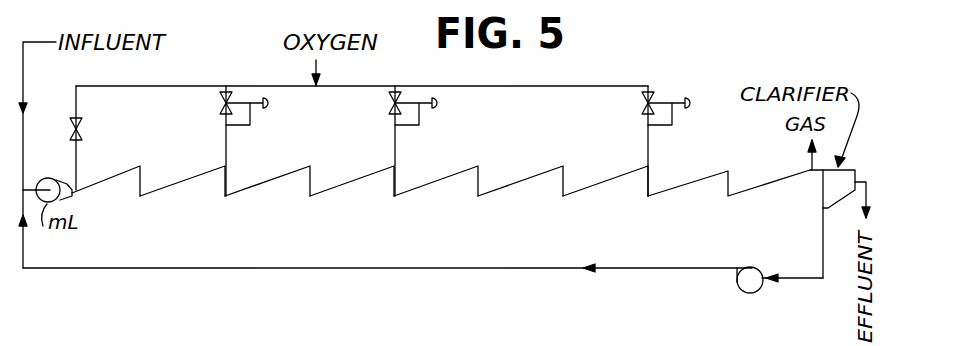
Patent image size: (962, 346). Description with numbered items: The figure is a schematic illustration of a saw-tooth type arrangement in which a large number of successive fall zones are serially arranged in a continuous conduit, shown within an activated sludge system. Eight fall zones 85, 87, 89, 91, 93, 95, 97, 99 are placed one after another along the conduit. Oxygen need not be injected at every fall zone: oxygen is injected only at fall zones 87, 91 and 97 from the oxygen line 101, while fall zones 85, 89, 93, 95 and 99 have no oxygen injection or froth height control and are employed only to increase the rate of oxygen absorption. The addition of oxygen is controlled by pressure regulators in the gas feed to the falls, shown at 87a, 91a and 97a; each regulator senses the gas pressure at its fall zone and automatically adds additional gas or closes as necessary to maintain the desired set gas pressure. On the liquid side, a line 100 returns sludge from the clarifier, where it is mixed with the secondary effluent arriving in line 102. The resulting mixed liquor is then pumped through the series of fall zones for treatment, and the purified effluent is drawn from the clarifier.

The fall zone 85 is at (136, 189).
The fall zone 87 is at (222, 190).
The fall zone 89 is at (307, 190).
The fall zone 91 is at (390, 190).
The fall zone 93 is at (475, 190).
The fall zone 95 is at (560, 190).
The fall zone 97 is at (647, 192).
The fall zone 99 is at (729, 190).
The pressure regulator 87a is at (258, 112).
The pressure regulator 91a is at (423, 113).
The pressure regulator 97a is at (677, 115).
The sludge return line 100 is at (568, 270).
The oxygen line 101 is at (508, 86).
The secondary effluent line 102 is at (37, 178).